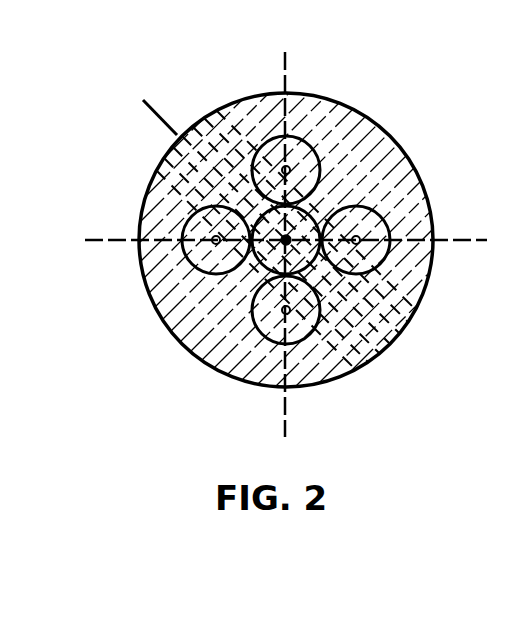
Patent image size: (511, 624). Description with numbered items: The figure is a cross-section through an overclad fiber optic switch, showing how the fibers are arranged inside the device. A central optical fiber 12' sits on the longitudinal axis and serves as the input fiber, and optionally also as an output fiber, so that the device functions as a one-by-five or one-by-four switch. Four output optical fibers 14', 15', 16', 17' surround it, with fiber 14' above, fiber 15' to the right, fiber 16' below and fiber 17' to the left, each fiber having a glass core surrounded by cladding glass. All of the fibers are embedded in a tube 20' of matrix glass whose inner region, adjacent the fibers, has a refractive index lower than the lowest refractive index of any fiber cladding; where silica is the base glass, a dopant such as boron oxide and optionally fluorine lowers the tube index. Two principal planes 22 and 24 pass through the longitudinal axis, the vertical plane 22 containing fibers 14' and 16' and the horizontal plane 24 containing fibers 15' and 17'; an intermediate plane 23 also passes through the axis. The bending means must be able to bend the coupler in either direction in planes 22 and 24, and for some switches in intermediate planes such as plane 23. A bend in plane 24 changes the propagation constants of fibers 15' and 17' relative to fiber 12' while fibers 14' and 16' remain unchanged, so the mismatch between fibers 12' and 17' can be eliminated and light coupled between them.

The optical fiber 12' is at (312, 222).
The optical fiber 14' is at (319, 136).
The optical fiber 15' is at (404, 224).
The optical fiber 16' is at (251, 344).
The optical fiber 17' is at (170, 255).
The tube 20' is at (304, 240).
The plane 22 is at (284, 62).
The plane 23 is at (155, 106).
The plane 24 is at (98, 240).